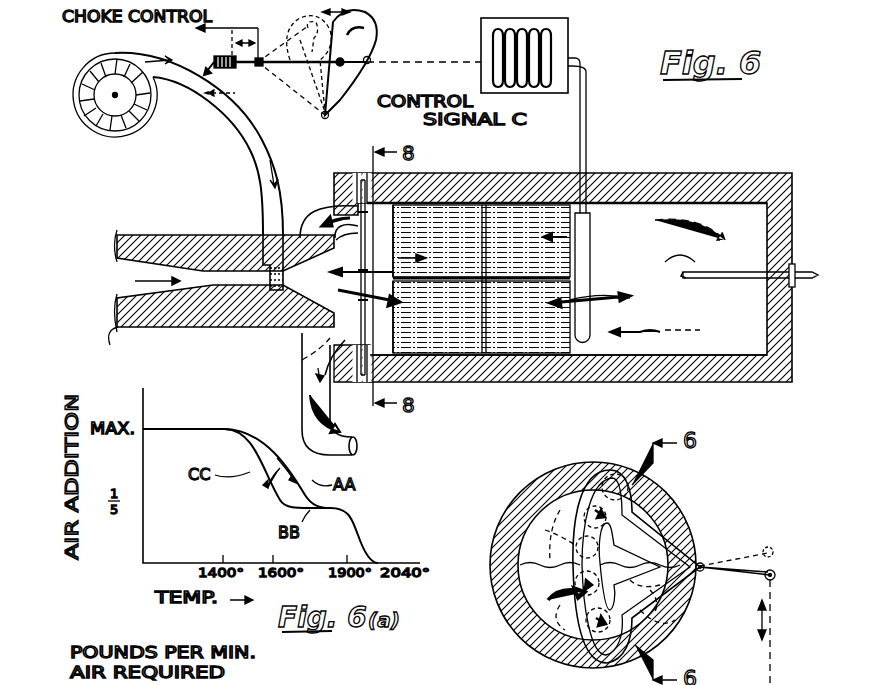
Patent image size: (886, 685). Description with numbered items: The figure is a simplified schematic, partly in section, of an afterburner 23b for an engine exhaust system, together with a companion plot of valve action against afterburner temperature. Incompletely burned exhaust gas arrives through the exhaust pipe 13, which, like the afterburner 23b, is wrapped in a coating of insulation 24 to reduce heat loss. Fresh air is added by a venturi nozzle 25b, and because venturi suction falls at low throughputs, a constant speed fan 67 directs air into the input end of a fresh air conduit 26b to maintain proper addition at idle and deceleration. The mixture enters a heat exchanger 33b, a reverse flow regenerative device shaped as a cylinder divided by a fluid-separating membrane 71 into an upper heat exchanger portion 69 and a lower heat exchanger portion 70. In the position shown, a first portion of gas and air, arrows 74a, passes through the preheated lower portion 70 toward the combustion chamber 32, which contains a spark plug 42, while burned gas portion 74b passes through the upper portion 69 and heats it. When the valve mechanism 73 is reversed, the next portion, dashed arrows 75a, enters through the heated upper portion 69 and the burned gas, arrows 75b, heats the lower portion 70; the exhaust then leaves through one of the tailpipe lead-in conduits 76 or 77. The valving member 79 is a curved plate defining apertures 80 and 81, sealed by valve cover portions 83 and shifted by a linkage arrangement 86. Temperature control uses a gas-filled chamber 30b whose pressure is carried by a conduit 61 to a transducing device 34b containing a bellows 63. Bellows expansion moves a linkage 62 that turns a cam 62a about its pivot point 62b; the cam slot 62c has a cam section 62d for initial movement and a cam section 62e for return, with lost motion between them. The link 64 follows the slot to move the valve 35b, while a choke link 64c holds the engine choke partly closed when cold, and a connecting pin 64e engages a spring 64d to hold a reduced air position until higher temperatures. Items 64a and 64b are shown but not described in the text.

The exhaust pipe 13 is at (166, 236).
The afterburner 23b is at (665, 141).
The coating of insulation 24 is at (803, 163).
The venturi nozzle 25b is at (268, 262).
The fresh air conduit 26b is at (248, 136).
The gas-filled chamber 30b is at (590, 230).
The combustion chamber 32 is at (733, 180).
The heat exchanger 33b is at (508, 295).
The pressure-operable temperature detection transducing device 34b is at (570, 32).
The valve 35b is at (210, 94).
The spark plug 42 is at (798, 272).
The conduit 61 is at (587, 106).
The linkage 62 is at (474, 85).
The cam 62a is at (370, 52).
The pivot point 62b is at (322, 118).
The cam slot 62c is at (345, 58).
The cam section 62d is at (418, 41).
The cam section 62e is at (385, 100).
The bellows 63 is at (546, 96).
The link 64 is at (270, 66).
The spring 64a is at (236, 66).
The travel indication 64b is at (228, 60).
The choke link 64c is at (212, 22).
The spring 64d is at (205, 58).
The connecting pin 64e is at (270, 92).
The constant speed fan 67 is at (92, 70).
The upper heat exchanger portion 69 is at (500, 214).
The lower heat exchanger portion 70 is at (508, 340).
The fluid-separating membrane 71 is at (480, 268).
The valve mechanism 73 is at (362, 178).
The first gas portion 74a is at (336, 305).
The gas portion 74b is at (322, 210).
The next gas portion 75a is at (334, 272).
The burned gas flow 75b is at (303, 366).
The tailpipe lead-in conduit 76 is at (300, 340).
The tailpipe lead-in conduit 77 is at (355, 378).
The valving member 79 is at (762, 580).
The aperture 80 is at (481, 317).
The aperture 81 is at (481, 241).
The valve cover portions 83 is at (638, 490).
The linkage arrangement 86 is at (770, 624).